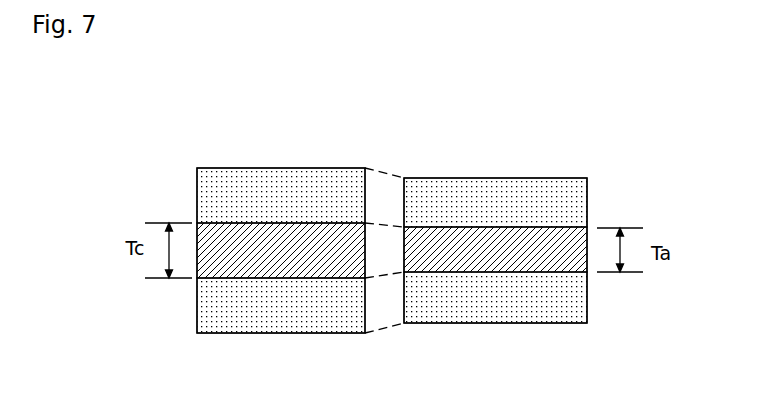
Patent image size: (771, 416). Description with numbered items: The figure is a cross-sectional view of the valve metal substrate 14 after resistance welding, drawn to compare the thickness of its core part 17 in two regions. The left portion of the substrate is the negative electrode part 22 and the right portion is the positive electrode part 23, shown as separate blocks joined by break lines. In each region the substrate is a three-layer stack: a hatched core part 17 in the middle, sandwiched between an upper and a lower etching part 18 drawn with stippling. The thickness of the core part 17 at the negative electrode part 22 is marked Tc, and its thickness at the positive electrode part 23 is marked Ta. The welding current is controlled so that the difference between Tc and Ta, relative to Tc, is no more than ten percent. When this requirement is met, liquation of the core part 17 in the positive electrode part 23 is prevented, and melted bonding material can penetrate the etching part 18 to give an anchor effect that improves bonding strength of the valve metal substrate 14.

The valve metal substrate 14 is at (104, 142).
The core part 17 is at (464, 260).
The etching part 18 is at (578, 205).
The negative electrode part 22 is at (197, 147).
The positive electrode part 23 is at (404, 145).